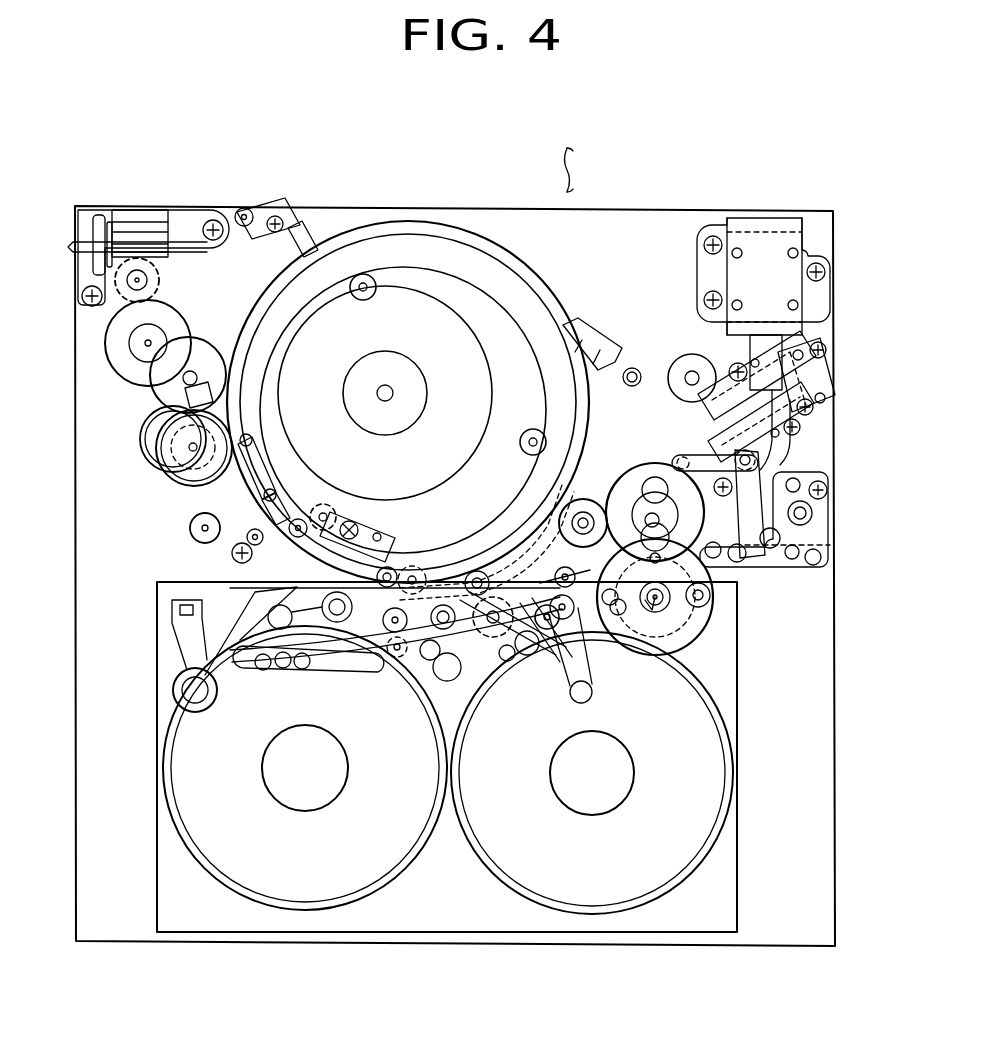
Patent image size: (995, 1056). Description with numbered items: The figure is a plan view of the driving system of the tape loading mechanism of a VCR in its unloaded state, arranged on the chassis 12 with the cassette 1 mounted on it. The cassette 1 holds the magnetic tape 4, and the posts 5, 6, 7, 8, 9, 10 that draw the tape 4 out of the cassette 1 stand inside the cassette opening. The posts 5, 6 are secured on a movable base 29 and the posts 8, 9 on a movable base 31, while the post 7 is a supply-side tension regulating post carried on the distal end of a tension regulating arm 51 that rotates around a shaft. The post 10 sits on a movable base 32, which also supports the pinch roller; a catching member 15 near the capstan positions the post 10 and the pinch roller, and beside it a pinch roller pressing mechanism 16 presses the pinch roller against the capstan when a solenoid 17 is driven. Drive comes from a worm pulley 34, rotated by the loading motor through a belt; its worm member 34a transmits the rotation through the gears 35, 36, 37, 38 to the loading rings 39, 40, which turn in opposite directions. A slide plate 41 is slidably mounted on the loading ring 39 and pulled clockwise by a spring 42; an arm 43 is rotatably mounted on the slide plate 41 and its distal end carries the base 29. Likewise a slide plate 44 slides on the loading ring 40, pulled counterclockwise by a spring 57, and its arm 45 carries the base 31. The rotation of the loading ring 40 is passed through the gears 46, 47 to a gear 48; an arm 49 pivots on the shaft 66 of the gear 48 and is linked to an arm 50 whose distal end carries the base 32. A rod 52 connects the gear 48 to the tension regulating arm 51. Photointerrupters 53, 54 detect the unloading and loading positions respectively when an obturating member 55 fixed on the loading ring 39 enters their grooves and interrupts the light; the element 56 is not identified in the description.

The cassette 1 is at (727, 868).
The magnetic tape 4 is at (500, 600).
The post 5 is at (360, 537).
The post 6 is at (390, 562).
The post 7 is at (373, 670).
The post 8 is at (422, 600).
The post 9 is at (437, 590).
The post 10 is at (540, 585).
The chassis 12 is at (762, 945).
The catching member 15 is at (830, 402).
The pinch roller pressing mechanism 16 is at (834, 524).
The solenoid 17 is at (750, 233).
The movable base 29 is at (364, 533).
The movable base 31 is at (410, 683).
The movable base 32 is at (558, 583).
The worm pulley 34 is at (110, 215).
The worm member 34a is at (150, 233).
The gear 35 is at (150, 280).
The gear 36 is at (177, 327).
The gear 37 is at (203, 357).
The gear 38 is at (180, 467).
The loading ring 39 is at (527, 290).
The loading ring 40 is at (497, 250).
The slide plate 41 is at (283, 487).
The spring 42 is at (260, 467).
The arm 43 is at (295, 648).
The slide plate 44 is at (480, 560).
The arm 45 is at (477, 680).
The gear 46 is at (590, 497).
The gear 47 is at (655, 463).
The gear 48 is at (703, 620).
The arm 49 is at (590, 667).
The arm 50 is at (557, 663).
The tension regulating arm 51 is at (223, 670).
The rod 52 is at (353, 667).
The photointerrupter 53 is at (226, 532).
The photointerrupter 54 is at (303, 237).
The obturating member 55 is at (283, 518).
The cam 56 is at (623, 483).
The spring 57 is at (540, 490).
The shaft 66 is at (653, 610).